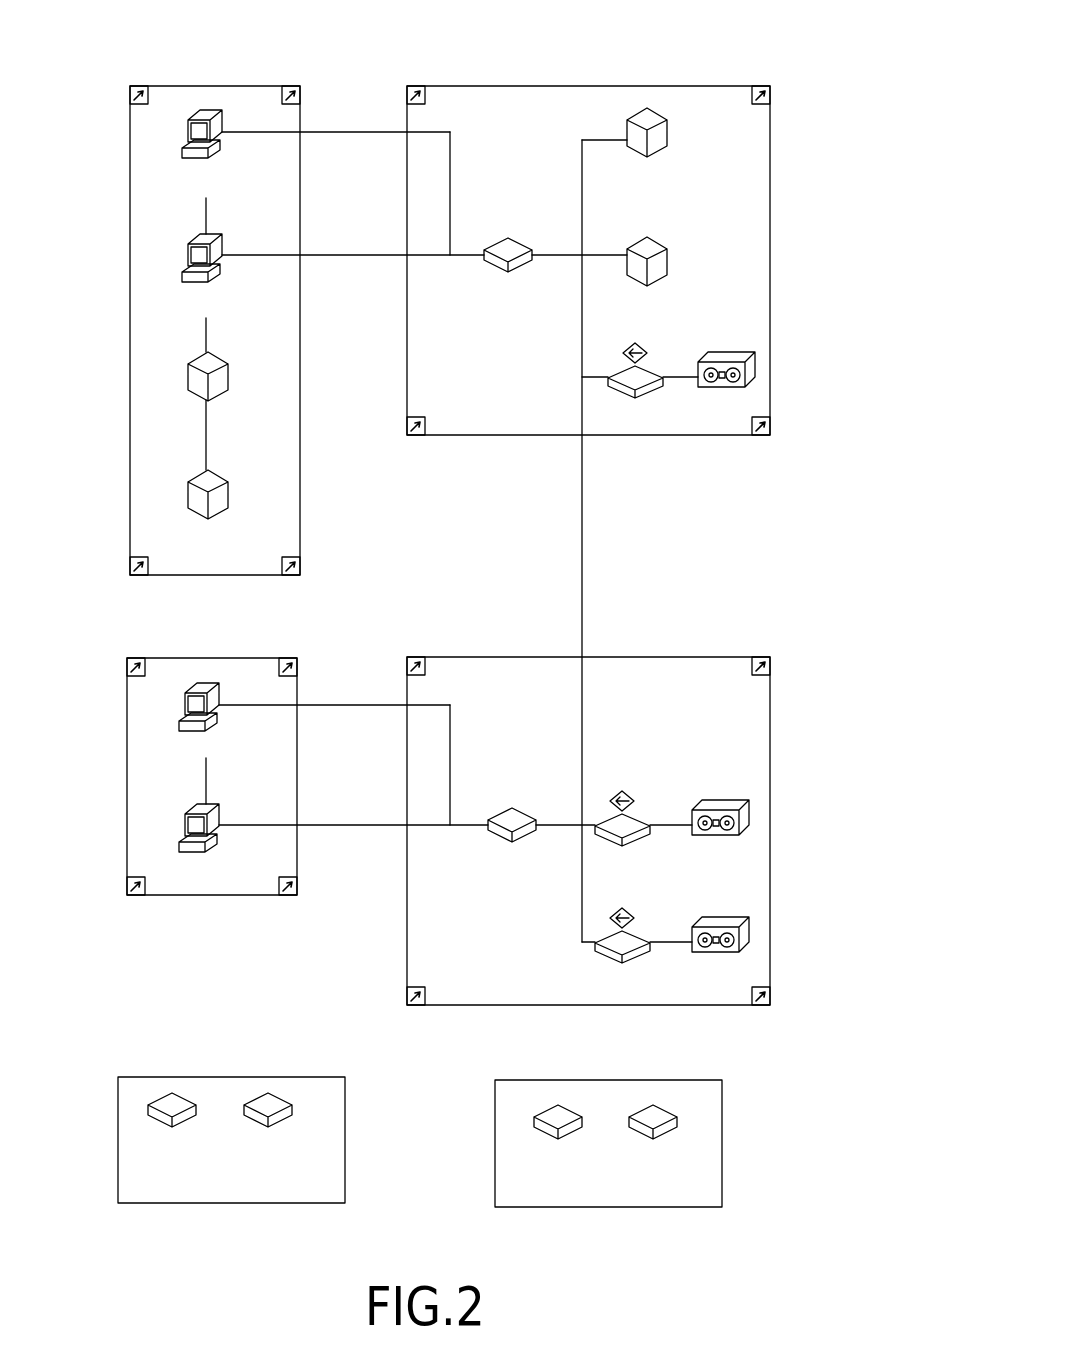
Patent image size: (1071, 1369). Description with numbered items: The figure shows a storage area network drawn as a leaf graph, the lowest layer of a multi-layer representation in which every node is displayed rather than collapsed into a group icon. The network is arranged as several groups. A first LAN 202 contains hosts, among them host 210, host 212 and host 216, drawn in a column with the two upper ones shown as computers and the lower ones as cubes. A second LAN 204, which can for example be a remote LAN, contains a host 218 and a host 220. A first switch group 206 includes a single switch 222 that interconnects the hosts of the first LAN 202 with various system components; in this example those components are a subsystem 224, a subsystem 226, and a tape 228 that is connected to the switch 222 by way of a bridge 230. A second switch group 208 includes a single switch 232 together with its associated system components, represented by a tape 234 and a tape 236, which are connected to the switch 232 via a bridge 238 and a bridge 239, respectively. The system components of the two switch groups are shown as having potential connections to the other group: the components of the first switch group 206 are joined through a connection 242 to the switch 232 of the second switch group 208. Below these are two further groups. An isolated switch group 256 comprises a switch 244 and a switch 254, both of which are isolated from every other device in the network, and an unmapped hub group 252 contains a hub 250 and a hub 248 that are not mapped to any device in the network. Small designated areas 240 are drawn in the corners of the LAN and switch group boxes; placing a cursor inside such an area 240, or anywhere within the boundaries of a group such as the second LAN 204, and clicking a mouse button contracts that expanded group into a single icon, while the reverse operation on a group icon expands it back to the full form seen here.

The first LAN 202 is at (129, 520).
The second LAN 204 is at (127, 661).
The first switch group 206 is at (455, 436).
The second switch group 208 is at (436, 656).
The host 210 is at (216, 112).
The host 212 is at (190, 252).
The host 216 is at (190, 487).
The host 218 is at (186, 703).
The host 220 is at (186, 811).
The switch 222 is at (510, 241).
The subsystem 224 is at (641, 107).
The subsystem 226 is at (668, 252).
The tape 228 is at (756, 357).
The bridge 230 is at (650, 366).
The switch 232 is at (512, 807).
The tape 234 is at (749, 806).
The tape 236 is at (749, 933).
The bridge 238 is at (634, 798).
The bridge 239 is at (641, 947).
The designated area 240 is at (292, 88).
The connection 242 is at (584, 530).
The switch 244 is at (160, 1104).
The hub 248 is at (676, 1121).
The hub 250 is at (548, 1114).
The unmapped hub group 252 is at (680, 1207).
The switch 254 is at (284, 1104).
The isolated switch group 256 is at (225, 1076).